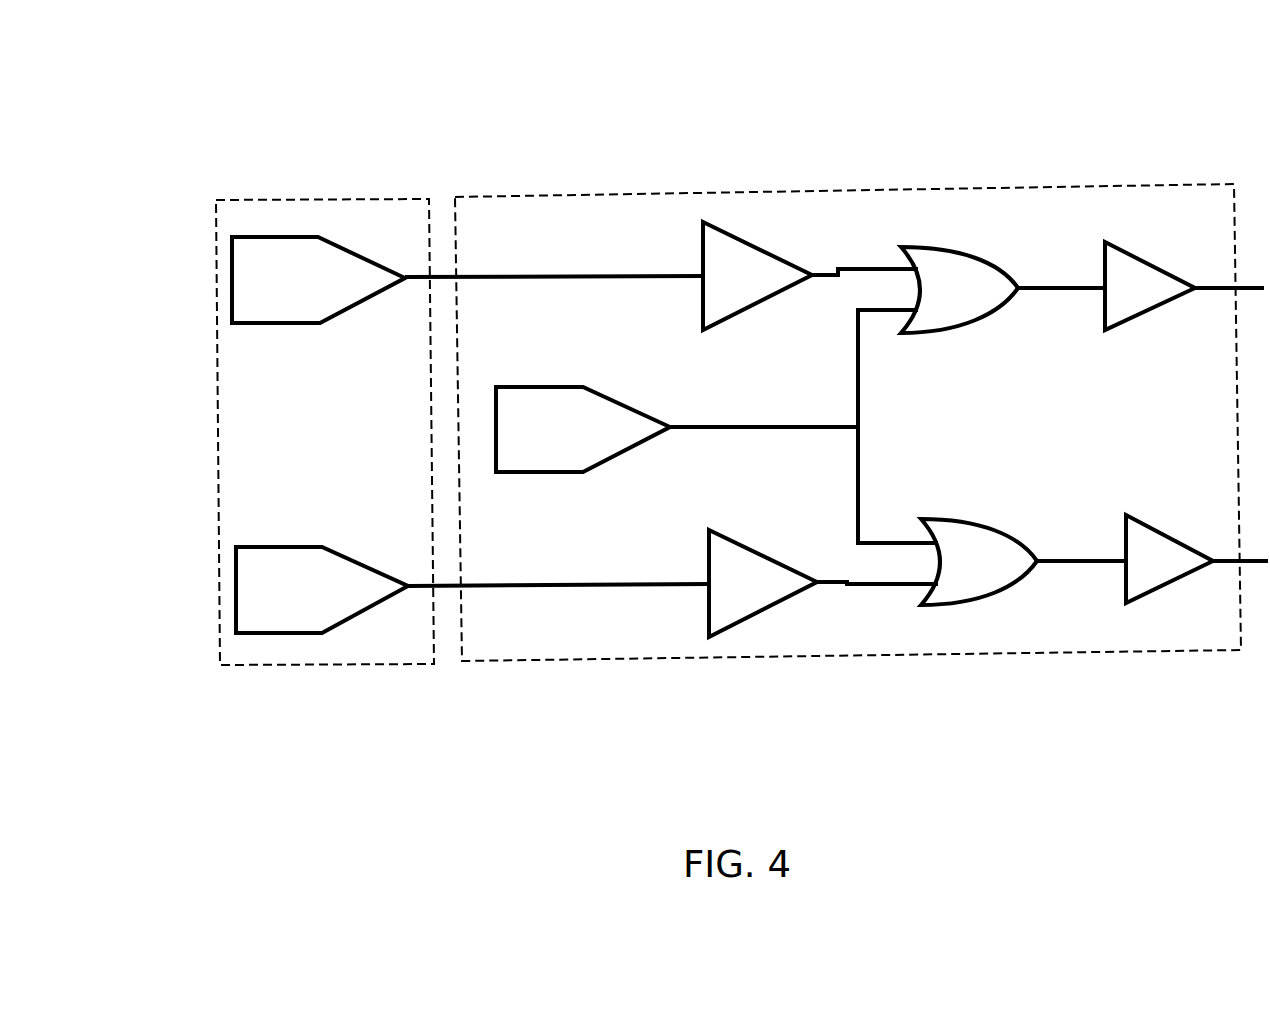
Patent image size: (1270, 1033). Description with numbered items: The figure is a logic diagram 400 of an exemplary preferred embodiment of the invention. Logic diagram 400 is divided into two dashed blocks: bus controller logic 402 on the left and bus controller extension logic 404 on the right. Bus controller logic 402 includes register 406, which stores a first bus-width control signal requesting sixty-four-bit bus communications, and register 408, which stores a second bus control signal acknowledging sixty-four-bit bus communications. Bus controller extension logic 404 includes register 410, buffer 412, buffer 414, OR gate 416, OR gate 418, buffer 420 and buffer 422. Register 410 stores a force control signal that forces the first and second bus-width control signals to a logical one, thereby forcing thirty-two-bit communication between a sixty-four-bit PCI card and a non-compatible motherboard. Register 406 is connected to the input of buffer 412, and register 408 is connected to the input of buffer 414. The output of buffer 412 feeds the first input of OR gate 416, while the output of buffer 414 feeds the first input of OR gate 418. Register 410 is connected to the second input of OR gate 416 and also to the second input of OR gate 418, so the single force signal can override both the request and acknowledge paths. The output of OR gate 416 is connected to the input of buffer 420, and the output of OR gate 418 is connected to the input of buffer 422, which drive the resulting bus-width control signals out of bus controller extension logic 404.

The logic diagram 400 is at (549, 109).
The bus controller logic 402 is at (324, 682).
The bus controller extension logic 404 is at (846, 674).
The register 406 is at (286, 221).
The register 408 is at (290, 530).
The register 410 is at (595, 493).
The buffer 412 is at (750, 228).
The buffer 414 is at (710, 656).
The OR gate 416 is at (938, 225).
The OR gate 418 is at (960, 622).
The buffer 420 is at (1124, 231).
The buffer 422 is at (1148, 618).